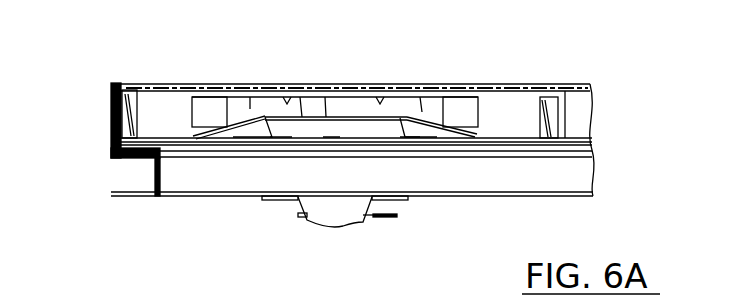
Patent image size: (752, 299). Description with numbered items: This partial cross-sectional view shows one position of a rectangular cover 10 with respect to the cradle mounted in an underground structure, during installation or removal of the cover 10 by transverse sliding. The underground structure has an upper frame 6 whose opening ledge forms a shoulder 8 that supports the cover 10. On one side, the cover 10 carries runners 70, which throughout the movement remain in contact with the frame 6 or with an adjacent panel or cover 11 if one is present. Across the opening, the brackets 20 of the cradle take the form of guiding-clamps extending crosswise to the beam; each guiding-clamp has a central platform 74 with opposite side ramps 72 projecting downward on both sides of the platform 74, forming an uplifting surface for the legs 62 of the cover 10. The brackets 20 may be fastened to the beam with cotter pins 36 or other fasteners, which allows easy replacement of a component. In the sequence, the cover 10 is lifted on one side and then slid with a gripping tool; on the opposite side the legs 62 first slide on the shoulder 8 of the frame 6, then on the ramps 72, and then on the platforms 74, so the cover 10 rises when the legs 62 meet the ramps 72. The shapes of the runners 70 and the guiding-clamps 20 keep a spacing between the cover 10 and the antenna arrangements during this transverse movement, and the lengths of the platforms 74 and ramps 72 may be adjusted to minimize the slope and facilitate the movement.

The upper frame 6 is at (111, 100).
The shoulder 8 is at (138, 157).
The cover 10 is at (462, 82).
The adjacent panel or cover 11 is at (578, 95).
The brackets 20 is at (308, 229).
The cotter pins 36 is at (385, 218).
The legs 62 is at (520, 130).
The runners 70 is at (251, 106).
The ramps 72 is at (237, 132).
The central platform 74 is at (322, 125).